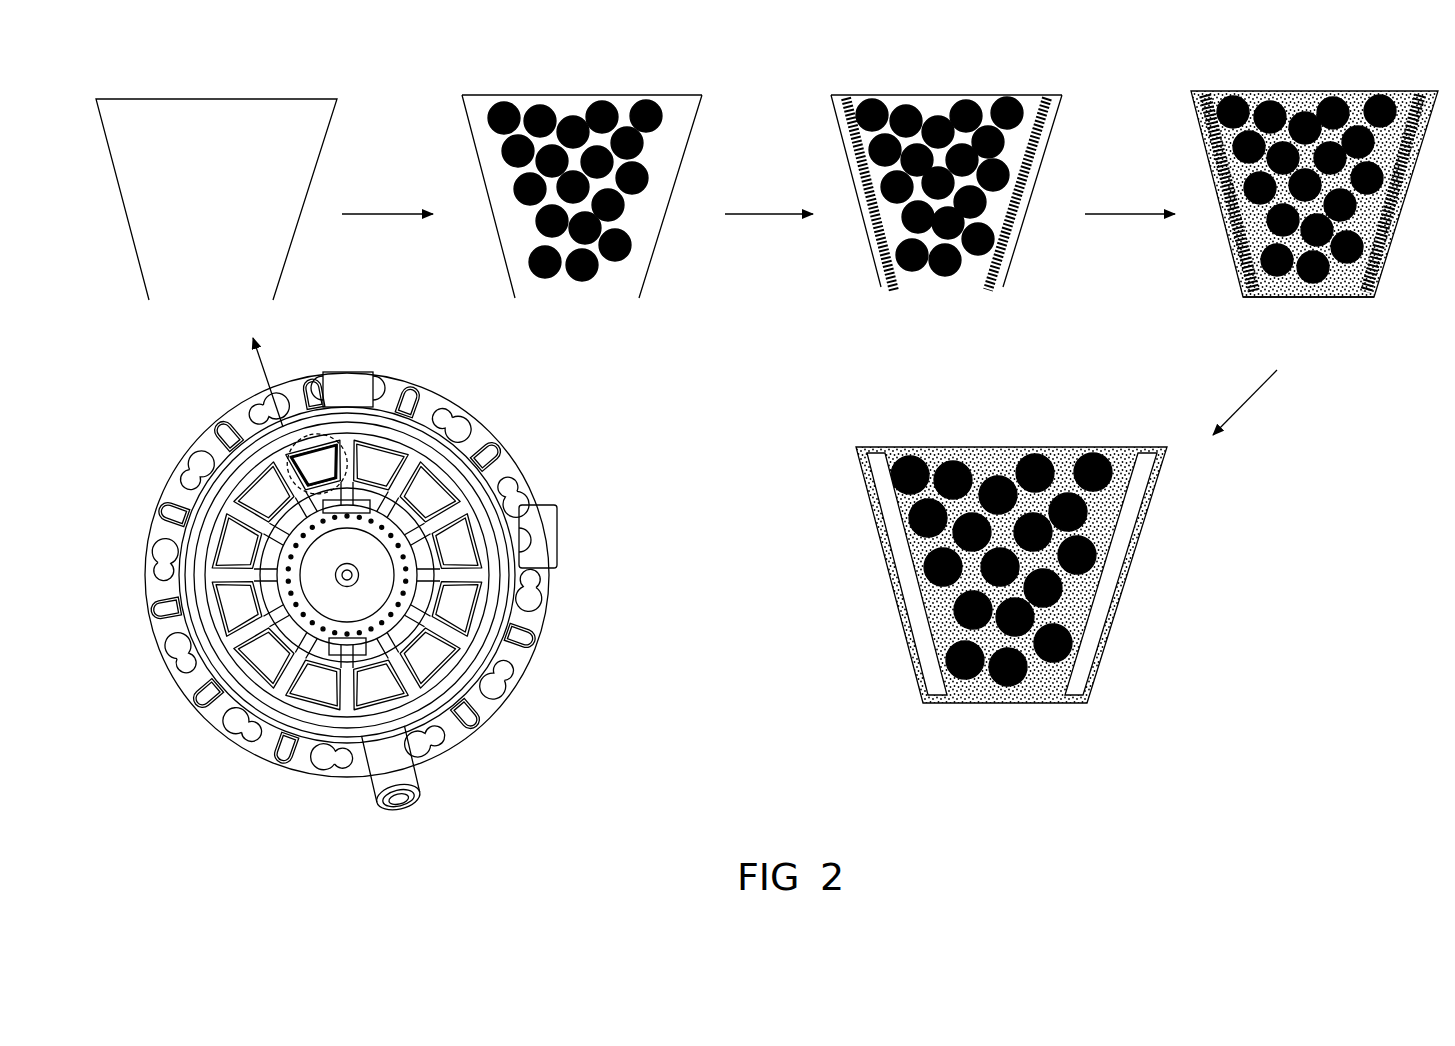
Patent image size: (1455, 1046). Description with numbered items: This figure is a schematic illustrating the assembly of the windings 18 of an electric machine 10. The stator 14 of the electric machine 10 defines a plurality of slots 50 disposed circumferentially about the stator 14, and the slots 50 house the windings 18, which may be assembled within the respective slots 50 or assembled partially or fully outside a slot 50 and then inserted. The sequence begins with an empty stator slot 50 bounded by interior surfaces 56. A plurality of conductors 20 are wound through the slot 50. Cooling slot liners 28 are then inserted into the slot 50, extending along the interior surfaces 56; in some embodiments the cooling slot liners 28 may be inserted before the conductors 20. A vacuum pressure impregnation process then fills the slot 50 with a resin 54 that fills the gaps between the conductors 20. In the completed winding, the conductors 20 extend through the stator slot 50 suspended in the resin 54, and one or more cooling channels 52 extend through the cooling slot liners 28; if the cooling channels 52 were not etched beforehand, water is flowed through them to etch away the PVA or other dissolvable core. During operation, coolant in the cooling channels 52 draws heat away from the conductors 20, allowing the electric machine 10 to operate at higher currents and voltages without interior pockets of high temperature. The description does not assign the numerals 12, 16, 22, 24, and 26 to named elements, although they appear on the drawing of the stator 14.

The electric machine 10 is at (349, 584).
The window ring 12 is at (365, 549).
The stator 14 is at (347, 564).
The fitting 16 is at (560, 558).
The windings 18 is at (1102, 534).
The conductors 20 is at (598, 95).
The keyhole slots 22 is at (365, 575).
The slot 24 is at (130, 588).
The ring flange 26 is at (347, 611).
The cooling slot liners 28 is at (893, 295).
The slots 50 is at (230, 182).
The cooling channels 52 is at (905, 575).
The resin 54 is at (1334, 299).
The interior surfaces 56 is at (298, 220).